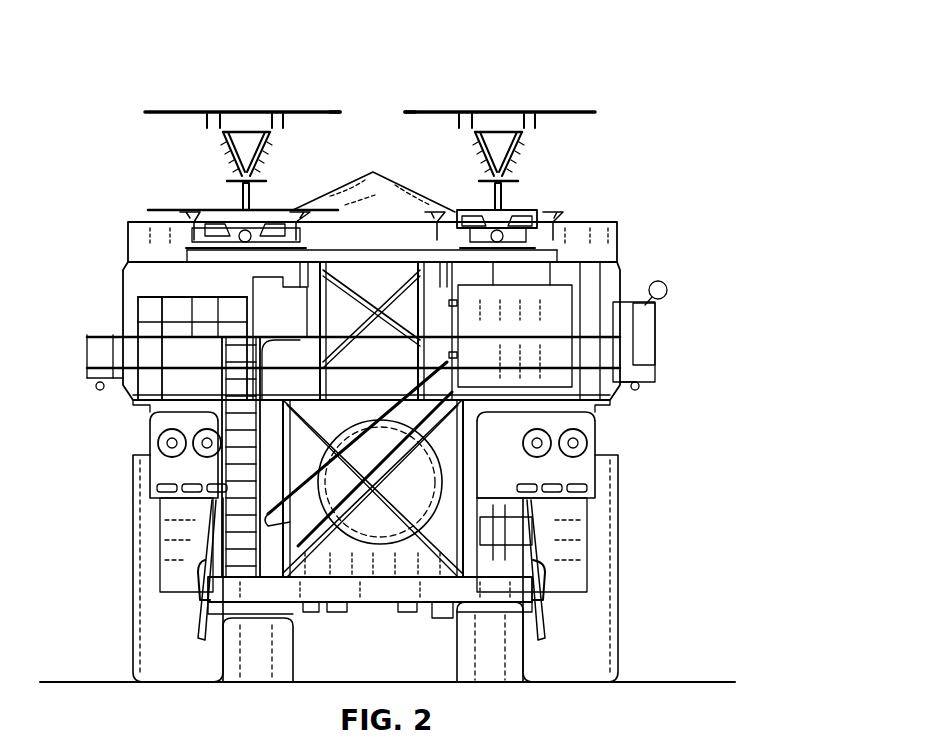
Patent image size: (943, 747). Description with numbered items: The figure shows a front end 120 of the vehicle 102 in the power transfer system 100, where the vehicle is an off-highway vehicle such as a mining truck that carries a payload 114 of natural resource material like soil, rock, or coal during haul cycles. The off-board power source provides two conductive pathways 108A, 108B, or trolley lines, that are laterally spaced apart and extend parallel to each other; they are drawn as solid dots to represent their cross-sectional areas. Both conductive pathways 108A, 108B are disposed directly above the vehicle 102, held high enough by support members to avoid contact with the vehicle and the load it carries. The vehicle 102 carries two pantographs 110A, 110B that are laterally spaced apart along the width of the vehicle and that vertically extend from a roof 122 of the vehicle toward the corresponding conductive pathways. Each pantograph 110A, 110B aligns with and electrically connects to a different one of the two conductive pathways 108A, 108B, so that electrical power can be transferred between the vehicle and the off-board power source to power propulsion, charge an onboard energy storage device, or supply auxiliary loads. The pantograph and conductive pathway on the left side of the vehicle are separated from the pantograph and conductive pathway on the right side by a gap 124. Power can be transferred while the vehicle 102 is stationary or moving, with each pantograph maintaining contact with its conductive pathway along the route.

The power transfer system 100 is at (746, 76).
The vehicle 102 is at (593, 232).
The first conductive pathway 108A is at (247, 105).
The second conductive pathway 108B is at (500, 105).
The first pantograph 110A is at (180, 111).
The second pantograph 110B is at (575, 111).
The payload 114 is at (350, 190).
The front end 120 is at (568, 544).
The roof 122 is at (547, 215).
The gap 124 is at (378, 112).